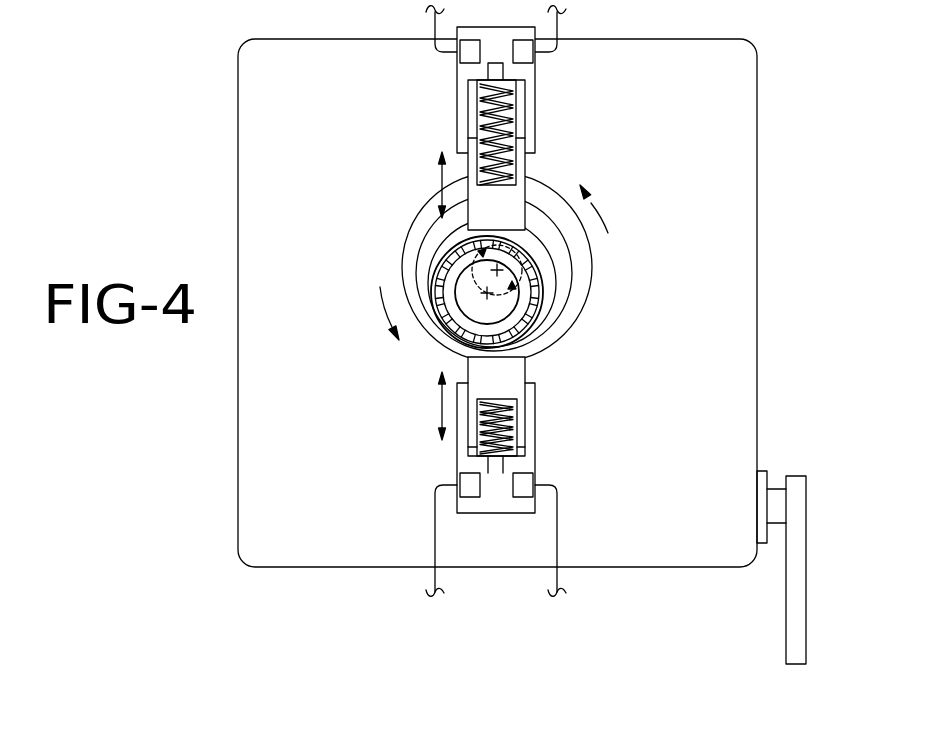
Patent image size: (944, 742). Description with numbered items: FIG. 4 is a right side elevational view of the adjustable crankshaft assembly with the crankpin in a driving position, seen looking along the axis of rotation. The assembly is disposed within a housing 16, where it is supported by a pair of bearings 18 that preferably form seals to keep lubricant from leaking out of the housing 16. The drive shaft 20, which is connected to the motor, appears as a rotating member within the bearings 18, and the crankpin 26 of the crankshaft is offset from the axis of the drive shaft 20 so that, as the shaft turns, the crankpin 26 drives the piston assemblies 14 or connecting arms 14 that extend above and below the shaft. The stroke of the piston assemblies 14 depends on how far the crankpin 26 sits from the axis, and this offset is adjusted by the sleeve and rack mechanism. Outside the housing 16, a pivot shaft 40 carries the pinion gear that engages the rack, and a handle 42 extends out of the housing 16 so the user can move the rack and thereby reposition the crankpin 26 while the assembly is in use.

The piston assembly 14 is at (434, 118).
The housing 16 is at (257, 122).
The bearing 18 is at (425, 217).
The drive shaft 20 is at (565, 265).
The crankpin 26 is at (465, 285).
The pivot shaft 40 is at (778, 506).
The handle 42 is at (792, 628).